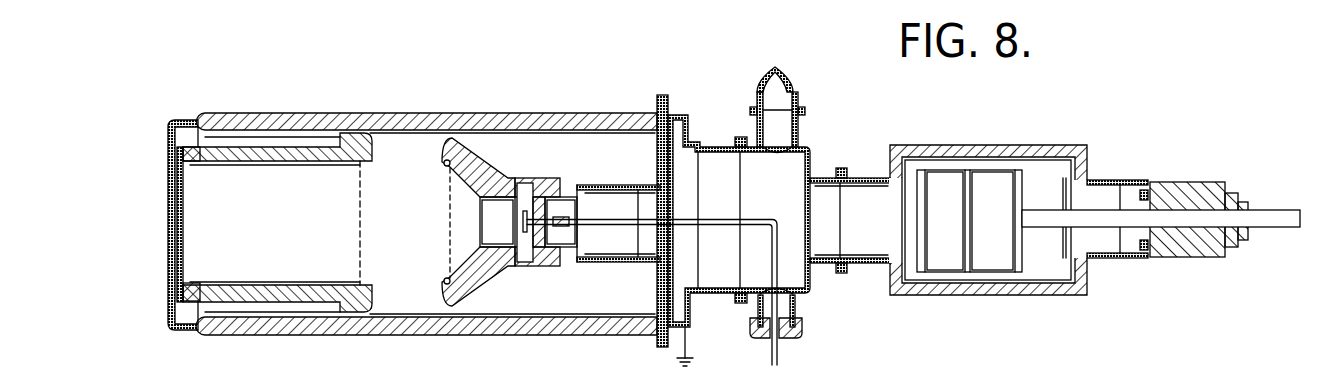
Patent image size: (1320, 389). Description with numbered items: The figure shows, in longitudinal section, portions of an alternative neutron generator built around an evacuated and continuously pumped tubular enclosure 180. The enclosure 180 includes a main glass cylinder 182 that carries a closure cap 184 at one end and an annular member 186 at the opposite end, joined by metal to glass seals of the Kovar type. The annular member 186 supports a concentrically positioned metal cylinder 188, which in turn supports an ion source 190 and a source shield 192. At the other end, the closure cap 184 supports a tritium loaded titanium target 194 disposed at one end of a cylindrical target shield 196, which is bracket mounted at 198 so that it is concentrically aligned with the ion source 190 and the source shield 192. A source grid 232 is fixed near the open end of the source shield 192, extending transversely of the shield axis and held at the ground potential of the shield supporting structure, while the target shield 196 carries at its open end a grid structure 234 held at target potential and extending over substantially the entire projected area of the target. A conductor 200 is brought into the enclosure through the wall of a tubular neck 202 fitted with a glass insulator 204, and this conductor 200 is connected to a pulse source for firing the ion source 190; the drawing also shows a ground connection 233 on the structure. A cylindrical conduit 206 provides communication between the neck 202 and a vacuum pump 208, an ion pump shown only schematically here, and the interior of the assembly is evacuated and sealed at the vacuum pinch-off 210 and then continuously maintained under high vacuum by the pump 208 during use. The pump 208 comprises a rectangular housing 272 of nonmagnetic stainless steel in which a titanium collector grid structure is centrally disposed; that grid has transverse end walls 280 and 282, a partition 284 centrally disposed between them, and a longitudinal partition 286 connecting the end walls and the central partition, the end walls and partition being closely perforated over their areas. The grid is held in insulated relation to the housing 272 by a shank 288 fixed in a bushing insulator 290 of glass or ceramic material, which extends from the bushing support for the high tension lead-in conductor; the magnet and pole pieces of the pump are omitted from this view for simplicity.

The tubular enclosure 180 is at (589, 113).
The main glass cylinder 182 is at (257, 113).
The closure cap 184 is at (175, 120).
The annular member 186 is at (641, 113).
The metal cylinder 188 is at (615, 188).
The ion source 190 is at (517, 207).
The source shield 192 is at (476, 178).
The tritium loaded titanium target 194 is at (183, 218).
The cylindrical target shield 196 is at (287, 156).
The bracket mount 198 is at (186, 282).
The conductor 200 is at (708, 220).
The tubular neck 202 is at (812, 170).
The glass insulator 204 is at (800, 338).
The cylindrical conduit 206 is at (850, 175).
The vacuum pump 208 is at (996, 145).
The vacuum pinch-off 210 is at (783, 70).
The source grid 232 is at (447, 219).
The ground connection 233 is at (688, 342).
The grid structure 234 is at (362, 210).
The rectangular housing 272 is at (1063, 160).
The transverse end wall 280 is at (908, 218).
The transverse end wall 282 is at (1022, 206).
The partition 284 is at (968, 190).
The longitudinal partition 286 is at (972, 221).
The shank 288 is at (1095, 218).
The bushing insulator 290 is at (1172, 186).